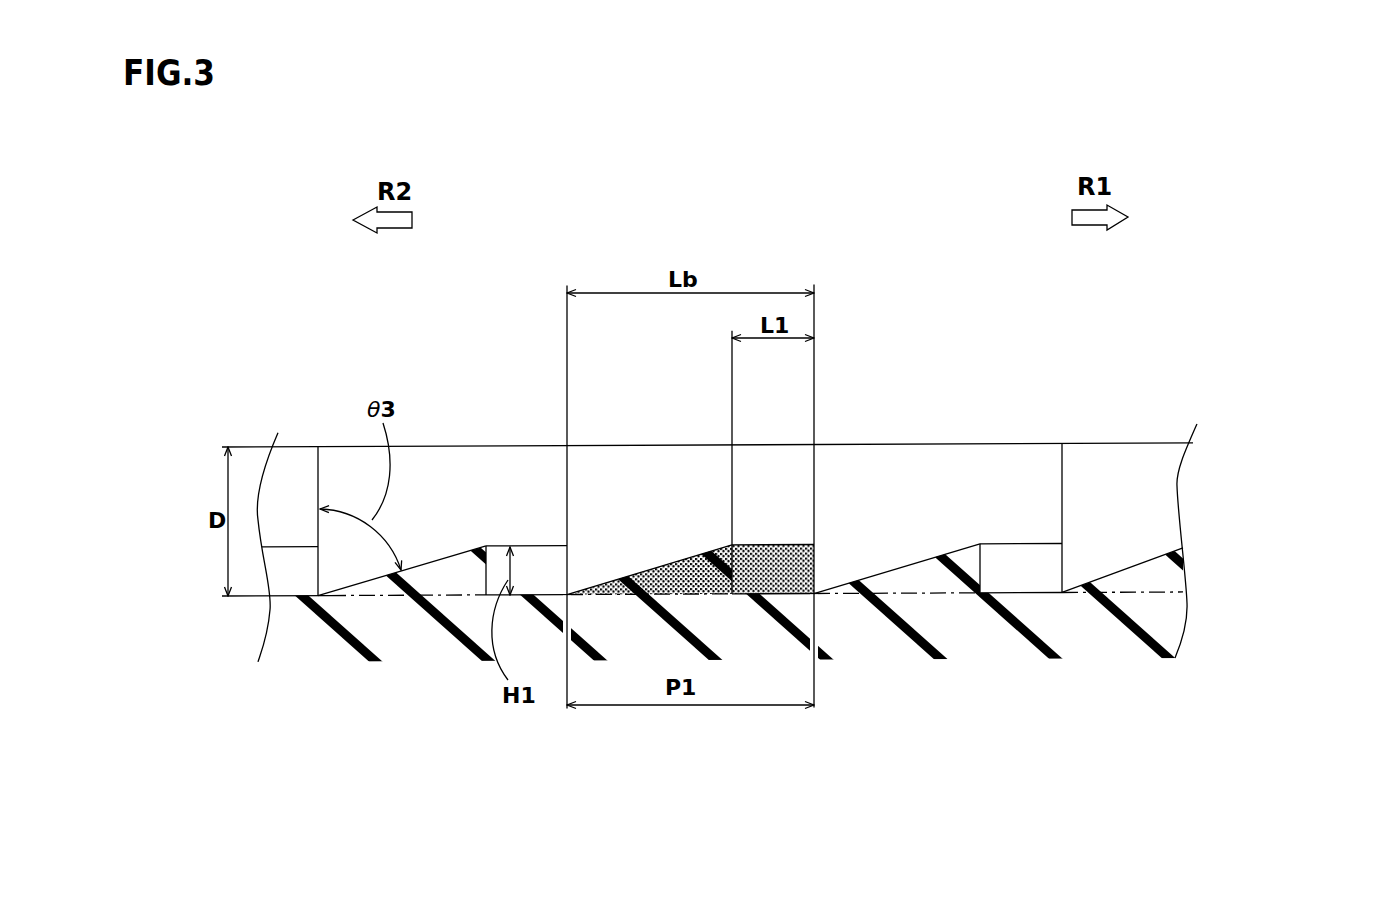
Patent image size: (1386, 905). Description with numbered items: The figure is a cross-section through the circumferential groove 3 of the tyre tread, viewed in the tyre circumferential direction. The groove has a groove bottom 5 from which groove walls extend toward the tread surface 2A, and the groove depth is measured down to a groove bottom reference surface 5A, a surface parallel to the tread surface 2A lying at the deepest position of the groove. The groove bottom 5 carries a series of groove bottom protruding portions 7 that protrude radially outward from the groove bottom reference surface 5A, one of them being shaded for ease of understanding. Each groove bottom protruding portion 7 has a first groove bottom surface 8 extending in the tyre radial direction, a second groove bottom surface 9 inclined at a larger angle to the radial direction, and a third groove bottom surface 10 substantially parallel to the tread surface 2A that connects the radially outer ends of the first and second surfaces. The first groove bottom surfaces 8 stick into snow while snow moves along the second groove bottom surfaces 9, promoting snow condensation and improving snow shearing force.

The circumferential groove 3 is at (928, 242).
The tread surface 2A is at (943, 445).
The groove bottom 5 is at (462, 542).
The groove bottom protruding portion 7 is at (535, 557).
The second groove bottom surface 9 is at (645, 563).
The third groove bottom surface 10 is at (768, 542).
The first groove bottom surface 8 is at (1012, 576).
The groove bottom reference surface 5A is at (1146, 592).